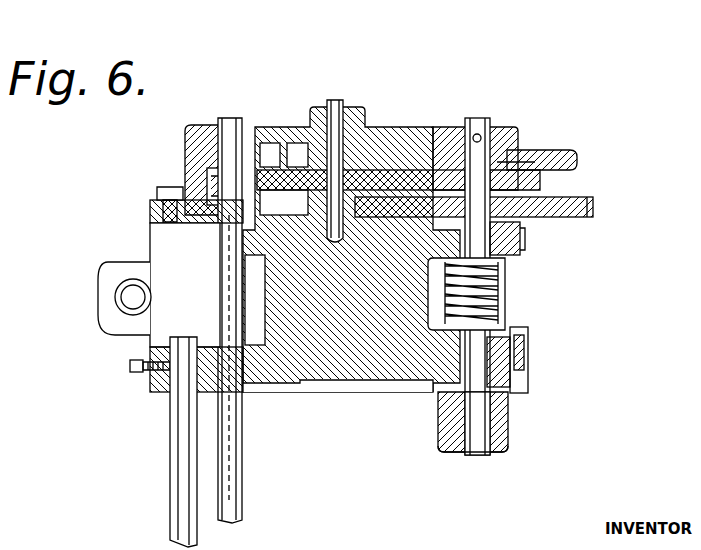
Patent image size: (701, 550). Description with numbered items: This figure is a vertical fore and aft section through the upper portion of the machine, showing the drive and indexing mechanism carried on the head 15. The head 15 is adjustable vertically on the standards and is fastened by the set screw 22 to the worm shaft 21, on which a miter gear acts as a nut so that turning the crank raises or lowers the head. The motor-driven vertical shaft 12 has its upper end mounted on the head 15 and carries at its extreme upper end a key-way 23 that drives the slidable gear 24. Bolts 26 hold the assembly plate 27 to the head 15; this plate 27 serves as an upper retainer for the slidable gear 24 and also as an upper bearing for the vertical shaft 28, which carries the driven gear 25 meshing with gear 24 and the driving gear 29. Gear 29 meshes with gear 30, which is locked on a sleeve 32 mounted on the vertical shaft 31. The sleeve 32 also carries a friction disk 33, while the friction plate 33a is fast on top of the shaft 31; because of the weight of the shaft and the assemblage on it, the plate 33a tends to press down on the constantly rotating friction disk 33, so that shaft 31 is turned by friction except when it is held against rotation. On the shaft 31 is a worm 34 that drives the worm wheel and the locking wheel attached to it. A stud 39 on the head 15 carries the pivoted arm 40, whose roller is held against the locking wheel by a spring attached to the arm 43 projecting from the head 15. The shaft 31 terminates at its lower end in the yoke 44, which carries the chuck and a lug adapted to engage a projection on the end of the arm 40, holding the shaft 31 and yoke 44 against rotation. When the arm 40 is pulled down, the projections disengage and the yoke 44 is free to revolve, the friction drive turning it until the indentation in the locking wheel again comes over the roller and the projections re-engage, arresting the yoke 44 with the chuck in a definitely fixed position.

The vertical shaft 12 is at (244, 486).
The head 15 is at (360, 380).
The worm shaft 21 is at (186, 480).
The set screw 22 is at (135, 374).
The key-way 23 is at (233, 127).
The gear 24 is at (207, 182).
The driven gear 25 is at (378, 165).
The bolts 26 is at (156, 193).
The assembly plate 27 is at (208, 125).
The vertical shaft 28 is at (335, 104).
The driving gear 29 is at (380, 142).
The gear 30 is at (594, 208).
The vertical shaft 31 is at (478, 420).
The sleeve 32 is at (540, 186).
The friction disk 33 is at (578, 165).
The friction plate 33a is at (517, 146).
The worm 34 is at (500, 288).
The stud 39 is at (530, 344).
The arm 40 is at (530, 366).
The arm 43 is at (522, 252).
The yoke 44 is at (510, 446).